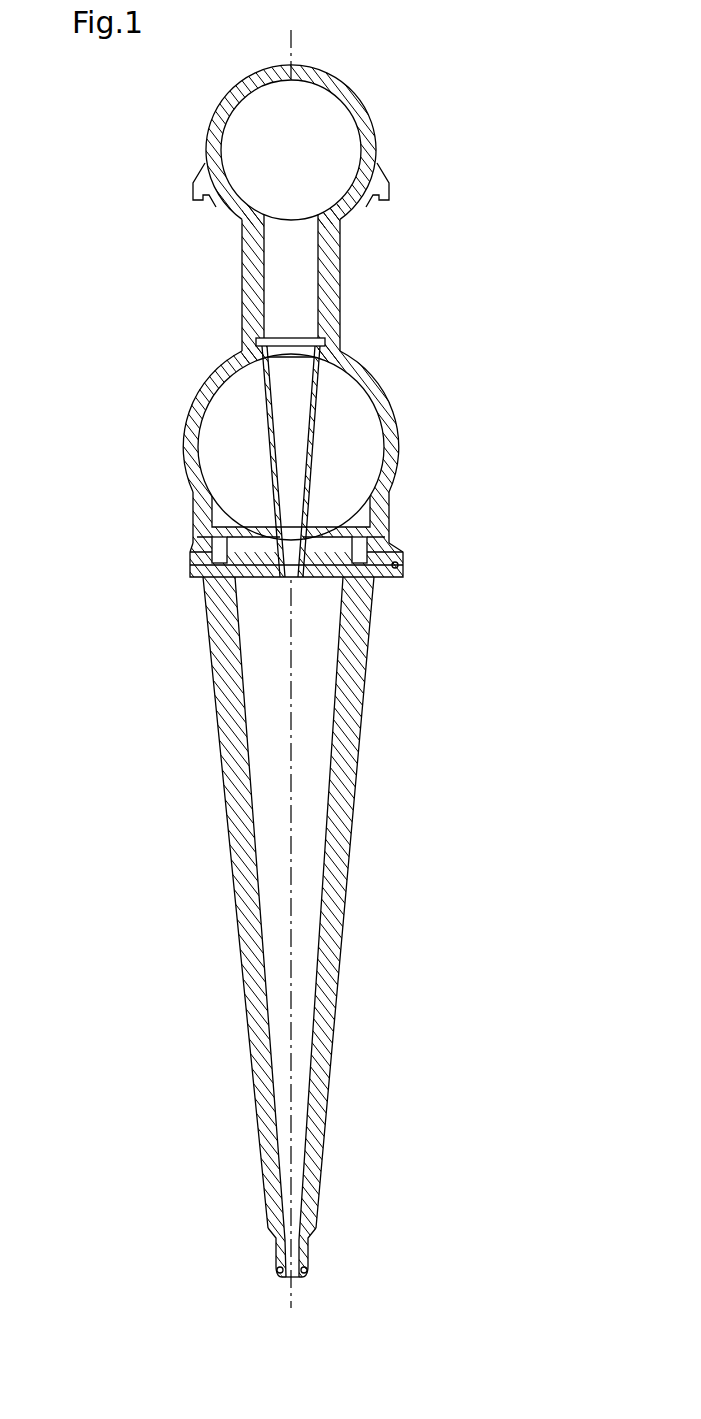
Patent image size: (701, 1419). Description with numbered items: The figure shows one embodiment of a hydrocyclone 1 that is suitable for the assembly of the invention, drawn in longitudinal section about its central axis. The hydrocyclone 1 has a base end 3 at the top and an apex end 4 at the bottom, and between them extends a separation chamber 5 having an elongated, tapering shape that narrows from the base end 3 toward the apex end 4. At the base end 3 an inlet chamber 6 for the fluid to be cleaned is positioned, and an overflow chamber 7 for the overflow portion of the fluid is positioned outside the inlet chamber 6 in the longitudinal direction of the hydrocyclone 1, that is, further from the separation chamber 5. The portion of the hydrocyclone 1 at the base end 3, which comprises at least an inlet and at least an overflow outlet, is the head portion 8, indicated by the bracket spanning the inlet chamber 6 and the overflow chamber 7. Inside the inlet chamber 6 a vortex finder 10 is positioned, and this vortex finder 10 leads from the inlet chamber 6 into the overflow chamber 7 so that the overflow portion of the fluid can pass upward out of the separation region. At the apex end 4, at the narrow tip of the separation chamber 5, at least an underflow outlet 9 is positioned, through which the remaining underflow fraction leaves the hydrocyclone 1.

The hydrocyclone 1 is at (436, 737).
The base end 3 is at (153, 606).
The apex end 4 is at (233, 1254).
The separation chamber 5 is at (310, 833).
The inlet chamber 6 is at (362, 462).
The overflow chamber 7 is at (335, 137).
The head portion 8 is at (170, 60).
The underflow outlet 9 is at (297, 1277).
The vortex finder 10 is at (310, 427).